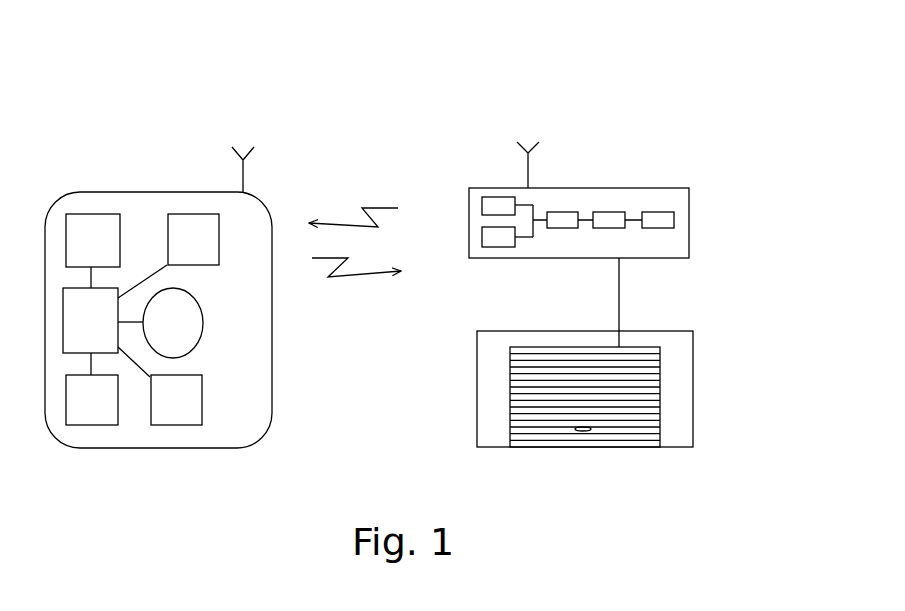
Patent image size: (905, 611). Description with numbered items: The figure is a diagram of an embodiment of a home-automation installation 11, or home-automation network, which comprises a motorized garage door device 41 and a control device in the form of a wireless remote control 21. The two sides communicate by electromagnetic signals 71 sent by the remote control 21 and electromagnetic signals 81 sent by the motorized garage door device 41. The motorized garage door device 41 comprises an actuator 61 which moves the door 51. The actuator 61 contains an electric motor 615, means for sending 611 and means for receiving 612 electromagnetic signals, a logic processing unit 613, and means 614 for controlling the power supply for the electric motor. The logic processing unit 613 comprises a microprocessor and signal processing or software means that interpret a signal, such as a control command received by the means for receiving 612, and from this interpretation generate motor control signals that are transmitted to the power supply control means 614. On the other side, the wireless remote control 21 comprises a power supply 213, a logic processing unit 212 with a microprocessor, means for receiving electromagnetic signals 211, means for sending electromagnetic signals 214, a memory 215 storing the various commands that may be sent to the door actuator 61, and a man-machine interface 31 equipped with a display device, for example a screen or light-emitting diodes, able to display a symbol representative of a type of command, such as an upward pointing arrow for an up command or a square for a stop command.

The home-automation installation 11 is at (347, 110).
The wireless remote control 21 is at (203, 189).
The means for receiving electromagnetic signals 211 is at (93, 251).
The logic processing unit 212 is at (103, 320).
The power supply 213 is at (92, 389).
The means for sending electromagnetic signals 214 is at (168, 256).
The memory 215 is at (160, 386).
The man-machine interface 31 is at (207, 325).
The electromagnetic signals 81 is at (375, 206).
The electromagnetic signals 71 is at (355, 280).
The actuator 61 is at (681, 187).
The means for sending electromagnetic signals 611 is at (493, 191).
The means for receiving electromagnetic signals 612 is at (497, 249).
The logic processing unit 613 is at (563, 231).
The means for controlling the power supply for the electric motor 614 is at (606, 231).
The electric motor 615 is at (657, 232).
The motorized garage door device 41 is at (756, 288).
The door 51 is at (664, 412).